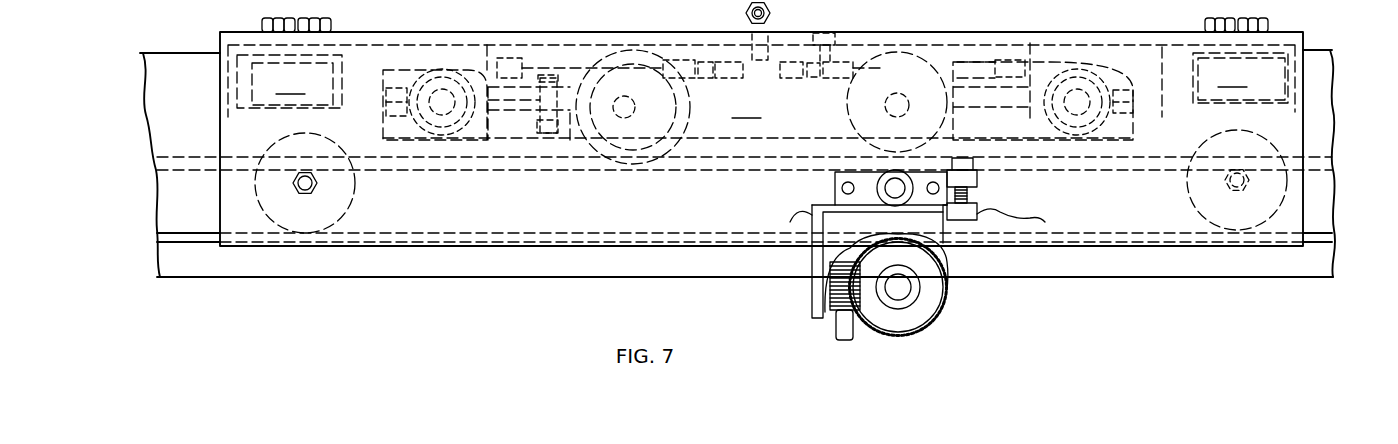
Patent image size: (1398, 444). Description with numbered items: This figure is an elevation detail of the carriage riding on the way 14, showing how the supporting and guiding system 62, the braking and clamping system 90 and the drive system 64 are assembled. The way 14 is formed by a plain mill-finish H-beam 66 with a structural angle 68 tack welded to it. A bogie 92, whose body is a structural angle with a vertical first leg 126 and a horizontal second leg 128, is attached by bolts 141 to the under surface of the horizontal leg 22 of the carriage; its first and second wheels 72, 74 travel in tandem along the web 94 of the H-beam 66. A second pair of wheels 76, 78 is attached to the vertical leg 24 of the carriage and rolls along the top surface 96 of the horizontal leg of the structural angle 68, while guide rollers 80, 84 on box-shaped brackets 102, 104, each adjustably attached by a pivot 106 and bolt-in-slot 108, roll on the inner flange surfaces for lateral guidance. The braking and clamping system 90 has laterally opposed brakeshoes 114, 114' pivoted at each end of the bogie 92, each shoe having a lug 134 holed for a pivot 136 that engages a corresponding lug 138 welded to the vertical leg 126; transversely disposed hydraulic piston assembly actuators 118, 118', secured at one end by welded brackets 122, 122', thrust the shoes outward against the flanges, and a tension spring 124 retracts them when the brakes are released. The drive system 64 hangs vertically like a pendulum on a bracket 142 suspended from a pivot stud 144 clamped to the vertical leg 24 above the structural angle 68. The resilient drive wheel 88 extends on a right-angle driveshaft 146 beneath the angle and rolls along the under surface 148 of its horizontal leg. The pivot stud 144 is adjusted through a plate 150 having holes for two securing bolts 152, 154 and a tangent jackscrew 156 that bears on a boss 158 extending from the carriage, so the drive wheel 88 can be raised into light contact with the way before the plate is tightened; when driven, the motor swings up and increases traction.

The way 14 is at (1331, 57).
The horizontal leg of the carriage 22 is at (1305, 32).
The vertical leg of the carriage 24 is at (1167, 217).
The supporting and guiding system 62 is at (294, 231).
The drive system 64 is at (884, 333).
The H-beam 66 is at (140, 78).
The structural angle 68 is at (191, 271).
The wheel 72 is at (607, 68).
The wheel 74 is at (940, 70).
The wheel 76 is at (352, 207).
The wheel 78 is at (1188, 190).
The guide roller 80 is at (289, 81).
The guide roller 84 is at (1240, 78).
The drive wheel 88 is at (947, 290).
The braking and clamping system 90 is at (616, 155).
The bogie 92 is at (746, 108).
The web of the H-beam 94 is at (1310, 150).
The top surface of the horizontally extended leg 96 is at (188, 233).
The box-shaped bracket 102 is at (230, 90).
The box-shaped bracket 104 is at (1295, 80).
The pivot 106 is at (330, 18).
The bolt-in-slot 108 is at (268, 18).
The brakeshoe 114 is at (450, 93).
The brakeshoe 114' is at (1070, 92).
The hydraulic piston assembly actuator 118 is at (437, 161).
The hydraulic piston assembly actuator 118' is at (1075, 175).
The bracket 122 is at (454, 67).
The bracket 122' is at (1115, 67).
The tension spring 124 is at (400, 88).
The first leg of the bogie 126 is at (682, 147).
The second leg of the bogie 128 is at (555, 50).
The lug 134 is at (630, 98).
The pivot 136 is at (538, 128).
The lug 138 is at (585, 135).
The bolt 141 is at (826, 32).
The bracket 142 is at (810, 300).
The pivot stud 144 is at (893, 185).
The right-angle driveshaft 146 is at (897, 290).
The under surface 148 is at (183, 247).
The plate 150 is at (830, 201).
The securing bolt 152 is at (837, 187).
The securing bolt 154 is at (945, 265).
The tangent jackscrew 156 is at (975, 194).
The boss 158 is at (1000, 215).